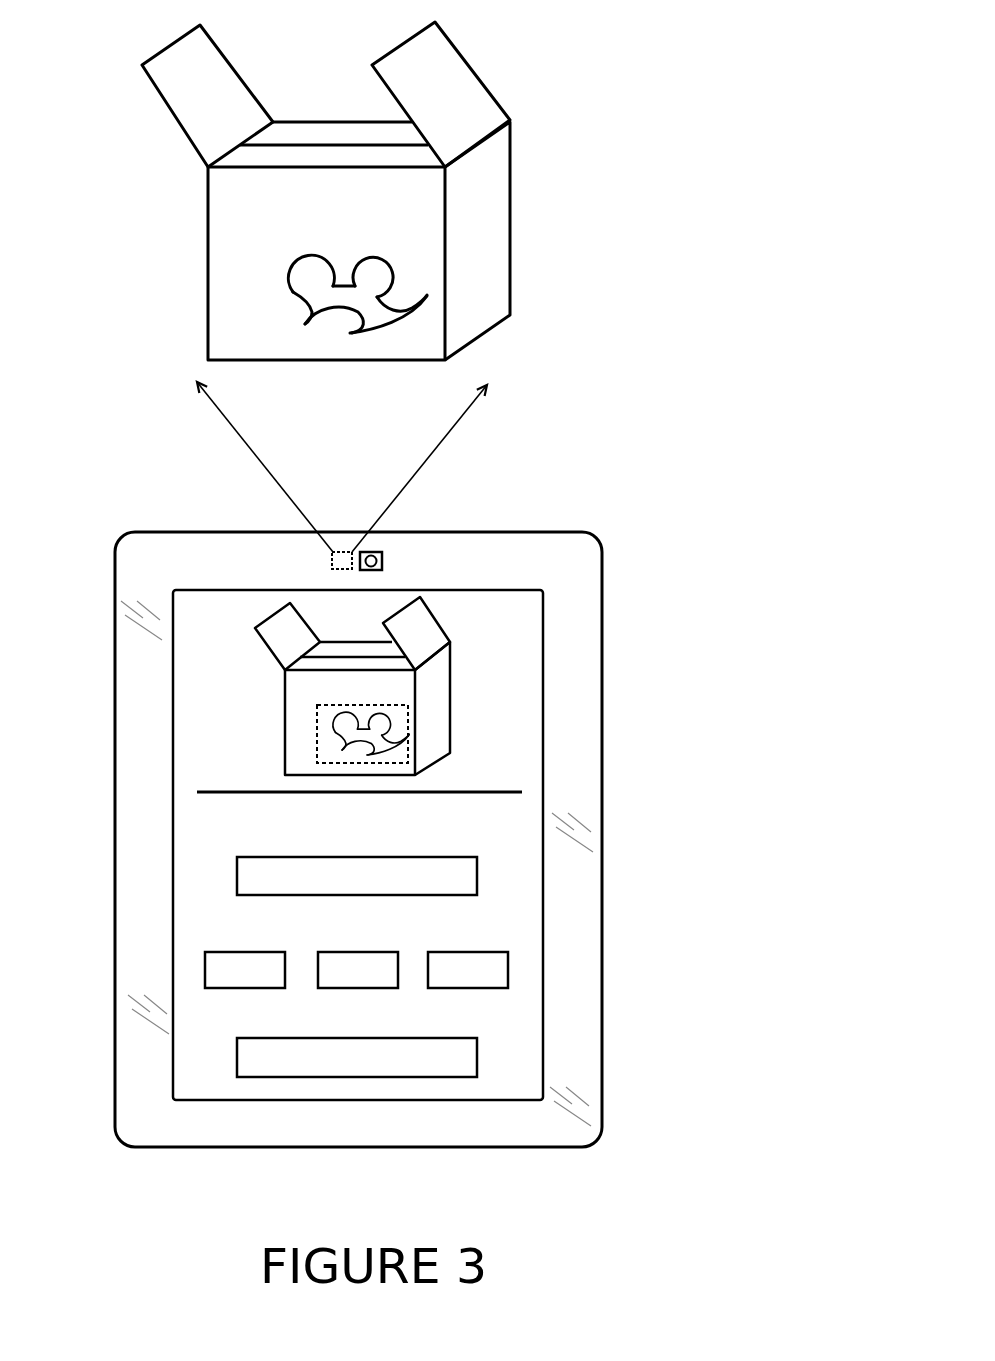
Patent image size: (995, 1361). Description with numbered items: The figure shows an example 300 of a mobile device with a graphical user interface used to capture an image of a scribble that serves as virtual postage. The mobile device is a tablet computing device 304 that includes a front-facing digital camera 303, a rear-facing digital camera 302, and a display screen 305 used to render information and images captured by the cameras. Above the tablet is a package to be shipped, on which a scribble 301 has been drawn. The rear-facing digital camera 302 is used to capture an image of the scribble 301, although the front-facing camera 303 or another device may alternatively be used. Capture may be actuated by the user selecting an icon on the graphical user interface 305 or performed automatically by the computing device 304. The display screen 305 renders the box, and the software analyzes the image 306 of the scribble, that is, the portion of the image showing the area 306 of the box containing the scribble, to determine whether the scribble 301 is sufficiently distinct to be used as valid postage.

The example 300 is at (687, 121).
The scribble 301 is at (277, 277).
The rear-facing digital camera 302 is at (333, 562).
The front-facing digital camera 303 is at (382, 560).
The tablet computing device 304 is at (600, 738).
The display screen 305 is at (524, 893).
The image of the scribble 306 is at (311, 730).